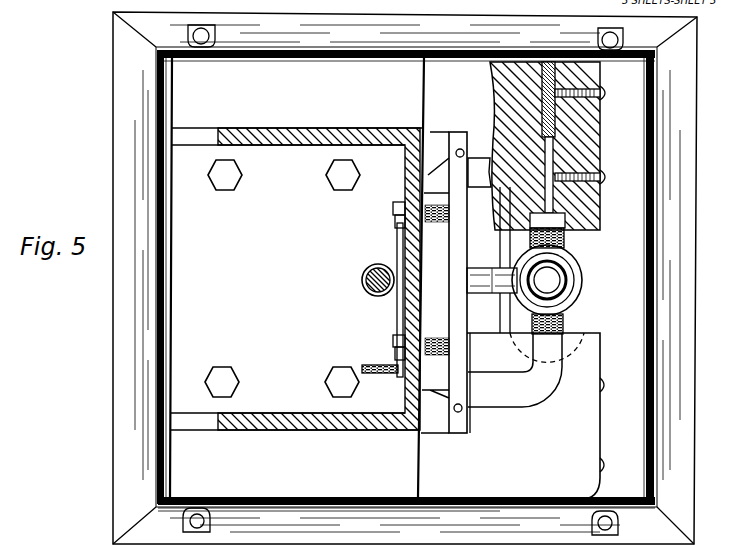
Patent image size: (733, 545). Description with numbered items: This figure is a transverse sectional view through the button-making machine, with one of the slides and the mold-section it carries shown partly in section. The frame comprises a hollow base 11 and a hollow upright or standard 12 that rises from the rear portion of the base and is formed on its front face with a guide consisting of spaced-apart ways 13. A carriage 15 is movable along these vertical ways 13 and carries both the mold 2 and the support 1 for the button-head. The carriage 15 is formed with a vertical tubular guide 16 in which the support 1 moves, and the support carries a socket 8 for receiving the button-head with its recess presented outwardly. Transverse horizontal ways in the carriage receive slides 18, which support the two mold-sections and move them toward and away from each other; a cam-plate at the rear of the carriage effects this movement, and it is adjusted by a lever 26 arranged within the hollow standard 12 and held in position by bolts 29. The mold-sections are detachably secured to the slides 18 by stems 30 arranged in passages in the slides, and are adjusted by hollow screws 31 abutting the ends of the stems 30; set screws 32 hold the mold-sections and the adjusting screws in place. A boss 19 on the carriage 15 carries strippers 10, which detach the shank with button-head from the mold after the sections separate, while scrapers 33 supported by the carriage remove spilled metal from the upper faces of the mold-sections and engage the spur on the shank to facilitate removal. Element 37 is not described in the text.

The support 1 is at (575, 289).
The mold 2 is at (568, 222).
The socket 8 is at (550, 279).
The strippers 10 is at (565, 239).
The hollow base 11 is at (114, 426).
The hollow upright or standard 12 is at (412, 178).
The ways 13 is at (435, 178).
The carriage 15 is at (452, 437).
The vertical tubular guide 16 is at (580, 304).
The slides 18 is at (592, 152).
The boss 19 is at (488, 274).
The lever 26 is at (400, 313).
The bolts 29 is at (395, 208).
The stems 30 is at (556, 202).
The hollow screws 31 is at (558, 116).
The set screws 32 is at (604, 92).
The scrapers 33 is at (480, 158).
The knob 37 is at (362, 279).